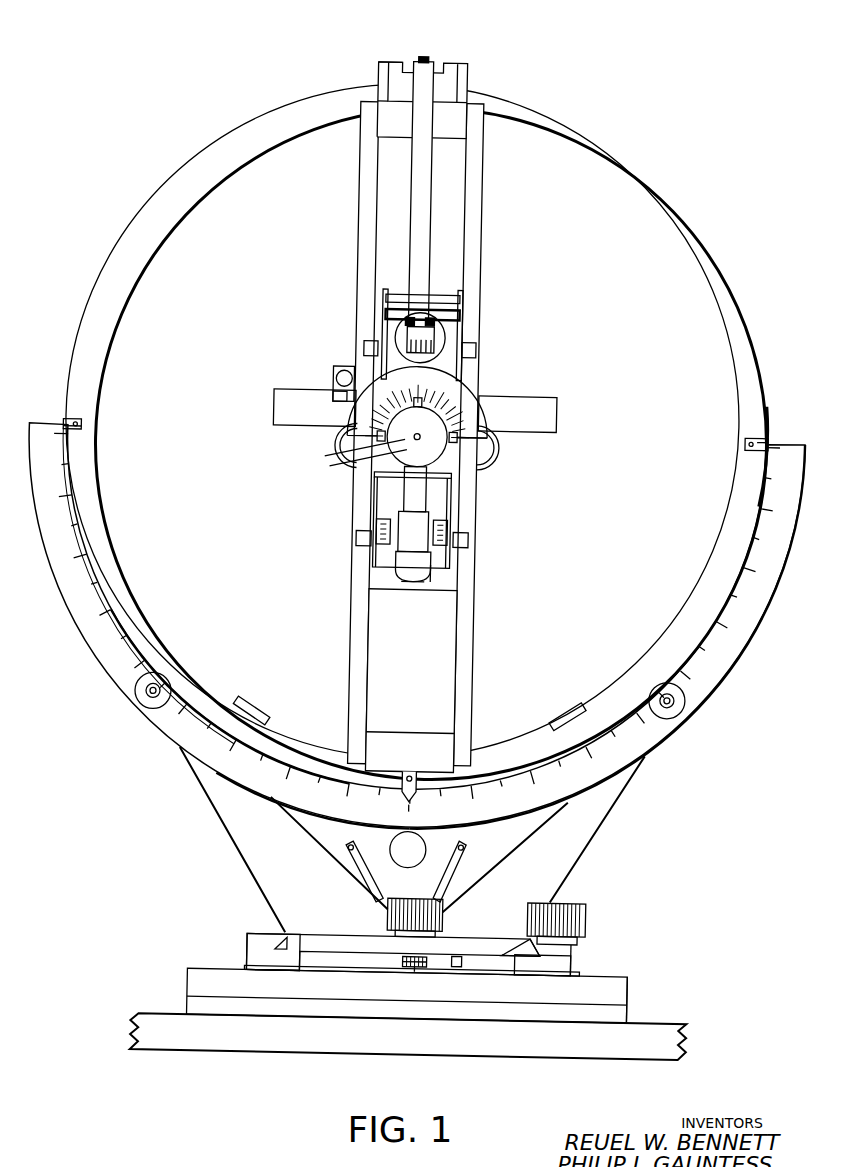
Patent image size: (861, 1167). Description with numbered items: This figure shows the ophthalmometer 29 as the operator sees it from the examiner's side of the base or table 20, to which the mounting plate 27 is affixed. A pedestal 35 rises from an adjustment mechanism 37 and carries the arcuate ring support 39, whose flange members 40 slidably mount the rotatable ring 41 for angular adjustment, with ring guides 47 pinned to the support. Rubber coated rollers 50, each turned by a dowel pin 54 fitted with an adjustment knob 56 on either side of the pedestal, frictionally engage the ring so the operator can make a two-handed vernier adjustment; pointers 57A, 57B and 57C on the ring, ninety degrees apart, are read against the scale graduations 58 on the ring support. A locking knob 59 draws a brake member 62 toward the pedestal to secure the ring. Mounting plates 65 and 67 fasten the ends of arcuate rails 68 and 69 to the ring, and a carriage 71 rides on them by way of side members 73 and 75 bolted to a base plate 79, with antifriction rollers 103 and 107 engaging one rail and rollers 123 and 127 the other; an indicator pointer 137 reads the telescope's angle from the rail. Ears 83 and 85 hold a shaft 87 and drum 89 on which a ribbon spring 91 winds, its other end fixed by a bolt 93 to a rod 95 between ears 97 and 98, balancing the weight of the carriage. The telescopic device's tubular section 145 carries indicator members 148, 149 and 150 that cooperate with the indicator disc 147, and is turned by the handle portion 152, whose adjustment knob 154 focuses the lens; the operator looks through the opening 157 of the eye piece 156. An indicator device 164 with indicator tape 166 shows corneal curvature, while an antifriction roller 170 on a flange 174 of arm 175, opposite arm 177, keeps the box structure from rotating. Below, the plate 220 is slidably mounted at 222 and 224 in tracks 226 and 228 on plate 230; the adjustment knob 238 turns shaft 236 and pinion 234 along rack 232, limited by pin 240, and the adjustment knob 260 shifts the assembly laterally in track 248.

The base or table 20 is at (580, 1054).
The mounting plate 27 is at (195, 1008).
The ophthalmometer 29 is at (130, 222).
The pedestal 35 is at (252, 852).
The adjustment mechanism 37 is at (614, 916).
The arcuate ring support 39 is at (186, 752).
The flange members 40 is at (262, 705).
The rotatable ring 41 is at (762, 376).
The ring guides 47 is at (62, 433).
The rubber coated rollers 50 is at (168, 692).
The dowel pin 54 is at (152, 696).
The adjustment knob 56 is at (150, 712).
The pointer 57A is at (66, 428).
The pointer 57B is at (424, 786).
The pointer 57C is at (760, 435).
The scale graduations 58 is at (47, 452).
The locking knob 59 is at (400, 849).
The brake member 62 is at (792, 562).
The mounting plate 65 is at (397, 138).
The mounting plate 67 is at (420, 735).
The arcuate rail 68 is at (360, 270).
The arcuate rail 69 is at (470, 262).
The carriage 71 is at (440, 580).
The side member 73 is at (375, 530).
The side member 75 is at (432, 521).
The base plate 79 is at (400, 566).
The ear 83 is at (395, 335).
The ear 85 is at (440, 323).
The shaft 87 is at (383, 292).
The drum 89 is at (456, 292).
The ribbon spring 91 is at (421, 160).
The bolt 93 is at (421, 57).
The rod 95 is at (393, 63).
The ear 97 is at (378, 81).
The ear 98 is at (456, 81).
The antifriction roller 103 is at (358, 541).
The antifriction roller 107 is at (362, 350).
The antifriction roller 123 is at (470, 541).
The antifriction roller 127 is at (473, 348).
The indicator pointer 137 is at (486, 411).
The tubular section 145 is at (490, 451).
The indicator disc 147 is at (423, 404).
The indicator member 148 is at (340, 453).
The indicator member 149 is at (442, 397).
The indicator member 150 is at (491, 440).
The handle portion 152 is at (430, 490).
The adjustment knob 154 is at (416, 582).
The eye piece 156 is at (400, 463).
The opening 157 is at (395, 452).
The indicator device 164 is at (455, 302).
The indicator tape 166 is at (400, 312).
The antifriction roller 170 is at (332, 381).
The flange 174 is at (314, 408).
The arm 175 is at (290, 429).
The arm 177 is at (556, 411).
The plate 220 is at (322, 936).
The slide mounting 222 is at (290, 942).
The slide mounting 224 is at (530, 947).
The track 226 is at (257, 955).
The track 228 is at (583, 956).
The plate 230 is at (585, 971).
The rack 232 is at (412, 965).
The pinion 234 is at (432, 971).
The shaft 236 is at (437, 960).
The adjustment knob 238 is at (428, 899).
The pin 240 is at (470, 967).
The track 248 is at (640, 996).
The adjustment knob 260 is at (577, 901).